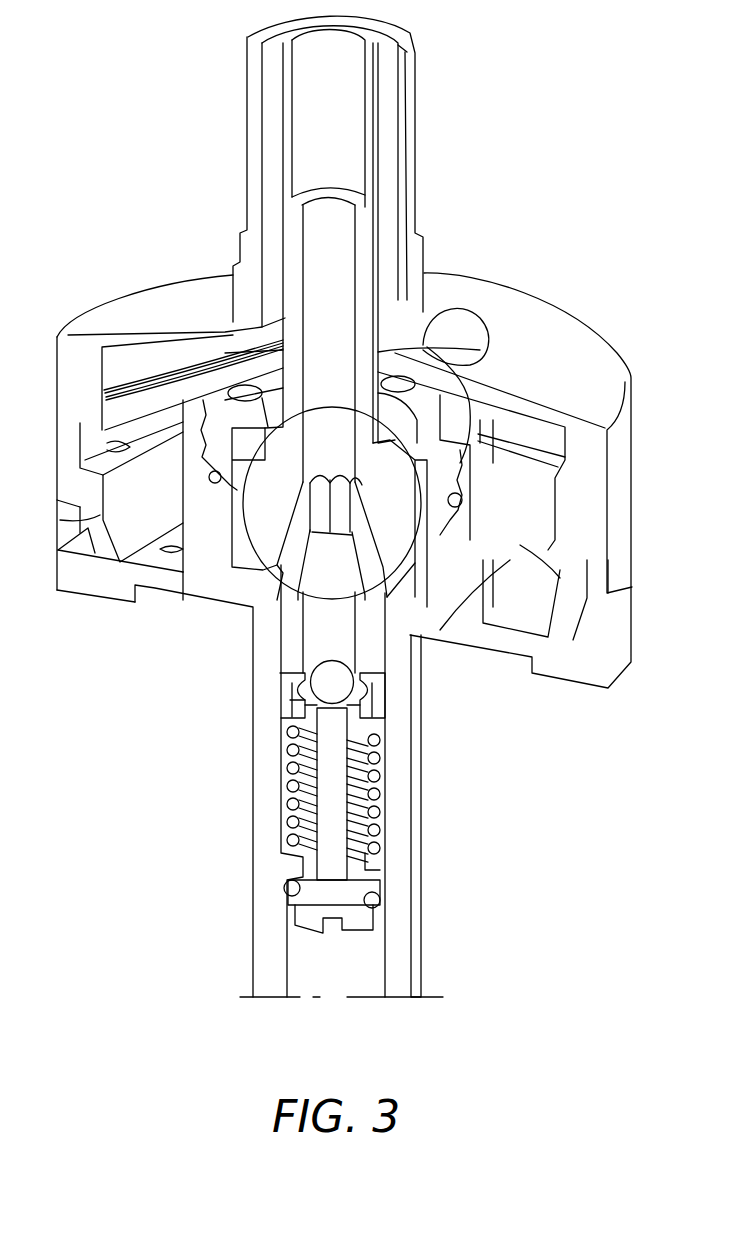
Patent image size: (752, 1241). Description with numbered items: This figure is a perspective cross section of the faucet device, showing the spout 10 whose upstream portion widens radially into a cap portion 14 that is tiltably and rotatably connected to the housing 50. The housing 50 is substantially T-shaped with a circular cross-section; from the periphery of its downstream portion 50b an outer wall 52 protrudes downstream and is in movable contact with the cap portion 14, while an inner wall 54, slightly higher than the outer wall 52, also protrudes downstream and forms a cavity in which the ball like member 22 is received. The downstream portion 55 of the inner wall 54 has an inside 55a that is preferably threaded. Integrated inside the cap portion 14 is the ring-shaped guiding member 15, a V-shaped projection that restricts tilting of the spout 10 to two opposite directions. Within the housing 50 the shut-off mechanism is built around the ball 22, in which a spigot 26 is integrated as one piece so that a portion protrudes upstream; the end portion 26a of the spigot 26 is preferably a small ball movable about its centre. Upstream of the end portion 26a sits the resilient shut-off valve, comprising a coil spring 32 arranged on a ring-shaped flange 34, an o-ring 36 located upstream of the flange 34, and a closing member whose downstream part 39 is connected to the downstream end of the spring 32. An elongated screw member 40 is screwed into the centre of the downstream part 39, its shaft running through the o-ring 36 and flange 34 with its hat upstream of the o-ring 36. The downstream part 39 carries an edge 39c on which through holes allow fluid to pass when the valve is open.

The spout 10 is at (414, 163).
The cap portion 14 is at (574, 342).
The guiding member 15 is at (178, 386).
The ball like member 22 is at (412, 584).
The spigot 26 is at (365, 651).
The end portion of the spigot 26a is at (327, 678).
The coil spring 32 is at (280, 817).
The flange 34 is at (365, 877).
The o-ring 36 is at (290, 882).
The downstream part of the closing member 39 is at (290, 713).
The edge 39c is at (292, 683).
The screw member 40 is at (328, 892).
The housing 50 is at (243, 620).
The downstream portion of the housing 50b is at (186, 594).
The outer wall 52 is at (93, 522).
The inner wall 54 is at (460, 582).
The downstream portion of the inner wall 55 is at (470, 484).
The inside of the downstream portion of the inner wall 55a is at (463, 505).